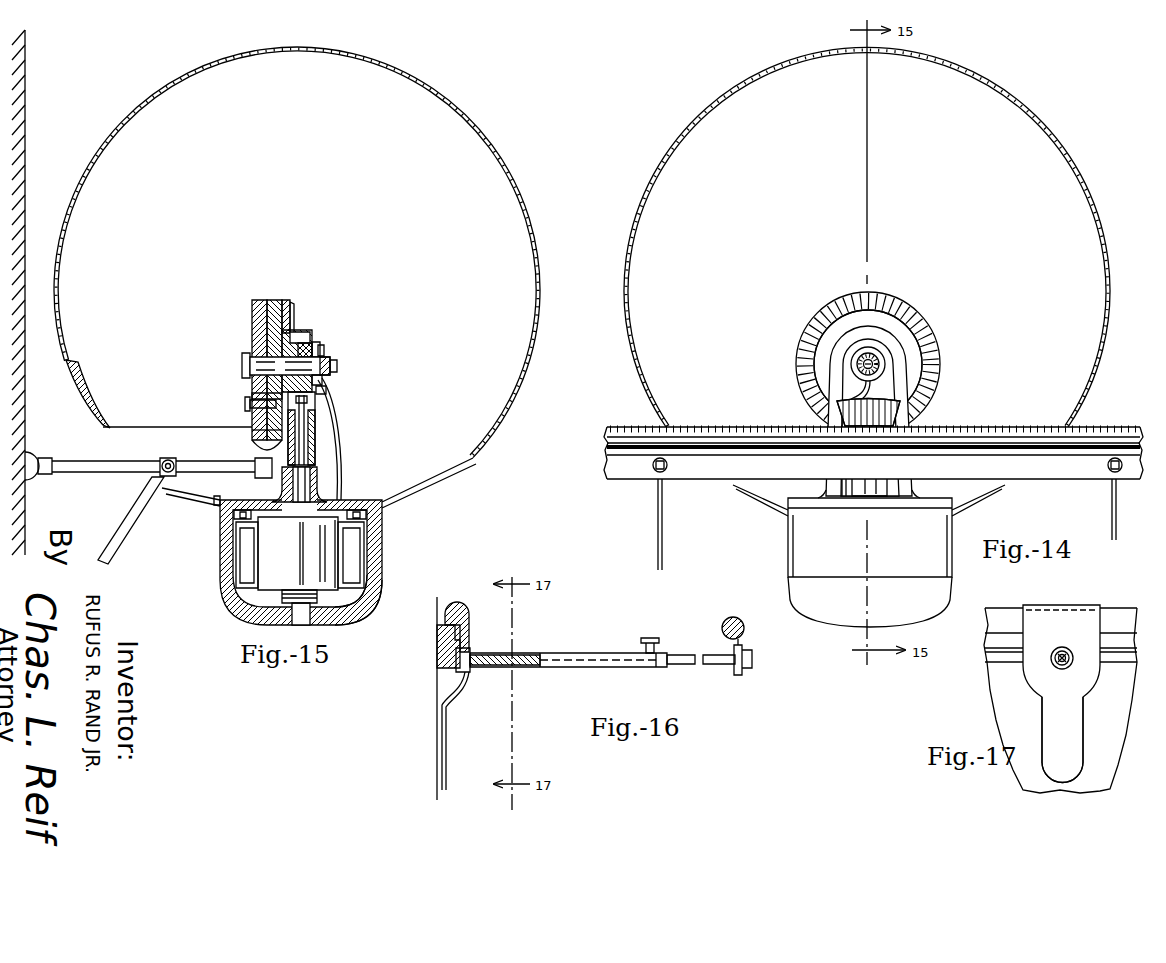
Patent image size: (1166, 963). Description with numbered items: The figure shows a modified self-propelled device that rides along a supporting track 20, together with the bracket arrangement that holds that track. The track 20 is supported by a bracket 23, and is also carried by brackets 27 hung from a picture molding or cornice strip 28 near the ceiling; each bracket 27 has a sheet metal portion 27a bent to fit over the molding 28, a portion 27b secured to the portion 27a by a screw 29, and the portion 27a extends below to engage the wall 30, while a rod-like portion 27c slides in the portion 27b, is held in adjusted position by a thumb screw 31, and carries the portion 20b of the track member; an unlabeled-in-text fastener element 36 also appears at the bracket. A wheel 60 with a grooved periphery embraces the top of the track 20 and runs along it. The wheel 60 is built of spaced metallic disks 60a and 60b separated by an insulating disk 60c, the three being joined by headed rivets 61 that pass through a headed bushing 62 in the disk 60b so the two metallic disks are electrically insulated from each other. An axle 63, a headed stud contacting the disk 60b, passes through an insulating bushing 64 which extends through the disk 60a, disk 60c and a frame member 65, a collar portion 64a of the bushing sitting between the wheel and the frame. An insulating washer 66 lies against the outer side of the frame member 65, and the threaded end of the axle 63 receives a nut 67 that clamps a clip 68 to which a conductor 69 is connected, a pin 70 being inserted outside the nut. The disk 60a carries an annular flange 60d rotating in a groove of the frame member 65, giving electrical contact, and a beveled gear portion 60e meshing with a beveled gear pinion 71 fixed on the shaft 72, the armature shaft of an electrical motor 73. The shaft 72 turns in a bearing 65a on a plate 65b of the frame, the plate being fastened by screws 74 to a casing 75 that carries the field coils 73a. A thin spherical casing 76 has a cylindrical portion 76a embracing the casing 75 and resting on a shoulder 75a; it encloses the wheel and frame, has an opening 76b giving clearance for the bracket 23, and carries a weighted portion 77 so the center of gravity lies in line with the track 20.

In FIG. 15, the supporting track 20 is at (258, 444).
In FIG. 14, the supporting track 20 is at (1088, 427).
In FIG. 16, the supporting track 20 is at (752, 620).
In FIG. 16, the portion of member 20 20b is at (745, 648).
In FIG. 15, the bracket 23 is at (120, 480).
In FIG. 16, the bracket 27 is at (611, 659).
In FIG. 16, the sheet metal portion 27a is at (470, 617).
In FIG. 17, the sheet metal portion 27a is at (1092, 620).
In FIG. 16, the portion of bracket 27b is at (530, 668).
In FIG. 17, the portion of bracket 27b is at (1075, 680).
In FIG. 16, the rod-like portion 27c is at (685, 654).
In FIG. 17, the rod-like portion 27c is at (1058, 650).
In FIG. 16, the picture molding or cornice strip 28 is at (437, 643).
In FIG. 16, the screw 29 is at (456, 675).
In FIG. 16, the wall 30 is at (436, 608).
In FIG. 16, the thumb screw 31 is at (650, 637).
In FIG. 16, the nut 36 is at (440, 680).
In FIG. 15, the wheel 60 is at (261, 345).
In FIG. 15, the metallic portion 60a is at (285, 299).
In FIG. 14, the metallic portion 60a is at (908, 303).
In FIG. 15, the metallic portion 60b is at (258, 299).
In FIG. 15, the insulating portion or disk 60c is at (272, 299).
In FIG. 15, the annular flange 60d is at (298, 331).
In FIG. 15, the beveled gear portion 60e is at (292, 320).
In FIG. 14, the beveled gear portion 60e is at (915, 335).
In FIG. 15, the headed rivets 61 is at (245, 402).
In FIG. 15, the headed bushing 62 is at (250, 410).
In FIG. 15, the axle 63 is at (242, 363).
In FIG. 15, the bushing 64 is at (311, 344).
In FIG. 15, the collar portion 64a is at (300, 333).
In FIG. 15, the frame member 65 is at (324, 396).
In FIG. 14, the frame member 65 is at (895, 350).
In FIG. 15, the bearing 65a is at (318, 473).
In FIG. 14, the bearing 65a is at (889, 463).
In FIG. 15, the plate 65b is at (400, 497).
In FIG. 15, the washer 66 is at (322, 348).
In FIG. 14, the washer 66 is at (858, 352).
In FIG. 15, the nut 67 is at (326, 358).
In FIG. 14, the nut 67 is at (860, 358).
In FIG. 15, the clip 68 is at (326, 379).
In FIG. 15, the conductor 69 is at (330, 409).
In FIG. 14, the conductor 69 is at (834, 386).
In FIG. 15, the pin 70 is at (340, 366).
In FIG. 14, the pin 70 is at (862, 363).
In FIG. 15, the beveled gear pinion 71 is at (312, 440).
In FIG. 14, the beveled gear pinion 71 is at (902, 412).
In FIG. 15, the shaft 72 is at (315, 456).
In FIG. 15, the electrical motor 73 is at (265, 555).
In FIG. 15, the field coils 73a is at (240, 580).
In FIG. 15, the screws 74 is at (228, 498).
In FIG. 15, the casing or housing 75 is at (383, 555).
In FIG. 14, the casing or housing 75 is at (800, 590).
In FIG. 15, the shoulder 75a is at (372, 592).
In FIG. 16, the shoulder 75a is at (420, 577).
In FIG. 15, the spherical casing 76 is at (525, 382).
In FIG. 14, the spherical casing 76 is at (1108, 333).
In FIG. 15, the cylindrical portion 76a is at (382, 537).
In FIG. 14, the cylindrical portion 76a is at (788, 530).
In FIG. 15, the opening 76b is at (207, 454).
In FIG. 15, the weighted portion 77 is at (95, 400).